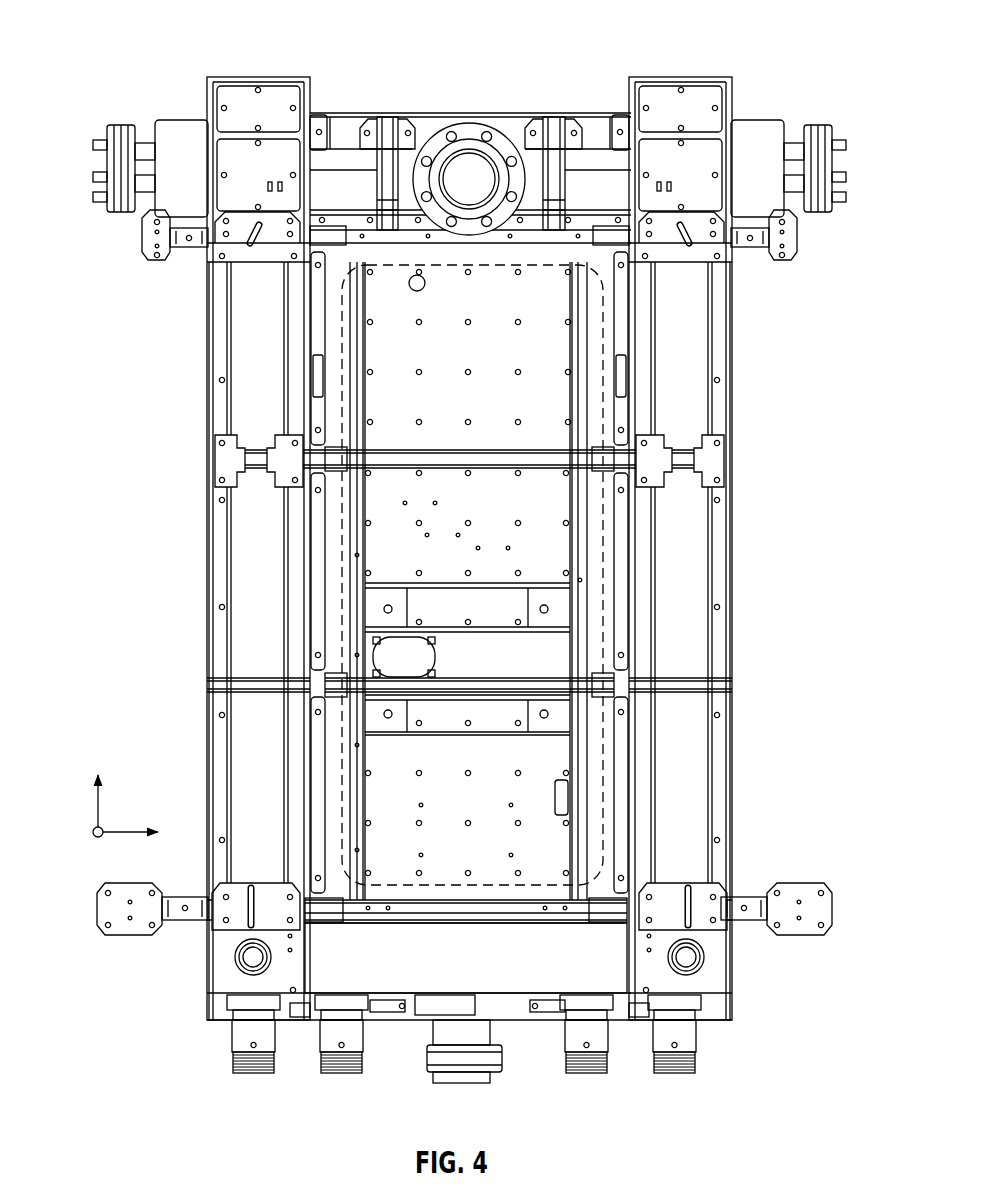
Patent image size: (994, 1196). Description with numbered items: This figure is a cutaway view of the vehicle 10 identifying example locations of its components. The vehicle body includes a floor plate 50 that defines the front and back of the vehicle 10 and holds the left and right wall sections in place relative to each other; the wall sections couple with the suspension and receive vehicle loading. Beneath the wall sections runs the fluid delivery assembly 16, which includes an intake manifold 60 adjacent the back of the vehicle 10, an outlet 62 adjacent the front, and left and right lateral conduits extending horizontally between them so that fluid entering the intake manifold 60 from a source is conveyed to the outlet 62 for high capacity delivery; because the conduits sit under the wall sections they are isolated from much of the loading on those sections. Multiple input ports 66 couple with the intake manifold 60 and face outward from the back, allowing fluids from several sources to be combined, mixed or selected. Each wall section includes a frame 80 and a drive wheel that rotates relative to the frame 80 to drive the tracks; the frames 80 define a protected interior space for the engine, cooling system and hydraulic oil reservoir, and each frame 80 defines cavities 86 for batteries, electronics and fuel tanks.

The vehicle 10 is at (162, 45).
The fluid delivery assembly 16 is at (212, 1036).
The floor plate 50 is at (347, 113).
The intake manifold 60 is at (492, 985).
The outlet 62 is at (466, 135).
The input port 66 is at (675, 1073).
The frame 80 is at (158, 443).
The cavity 86 is at (245, 422).